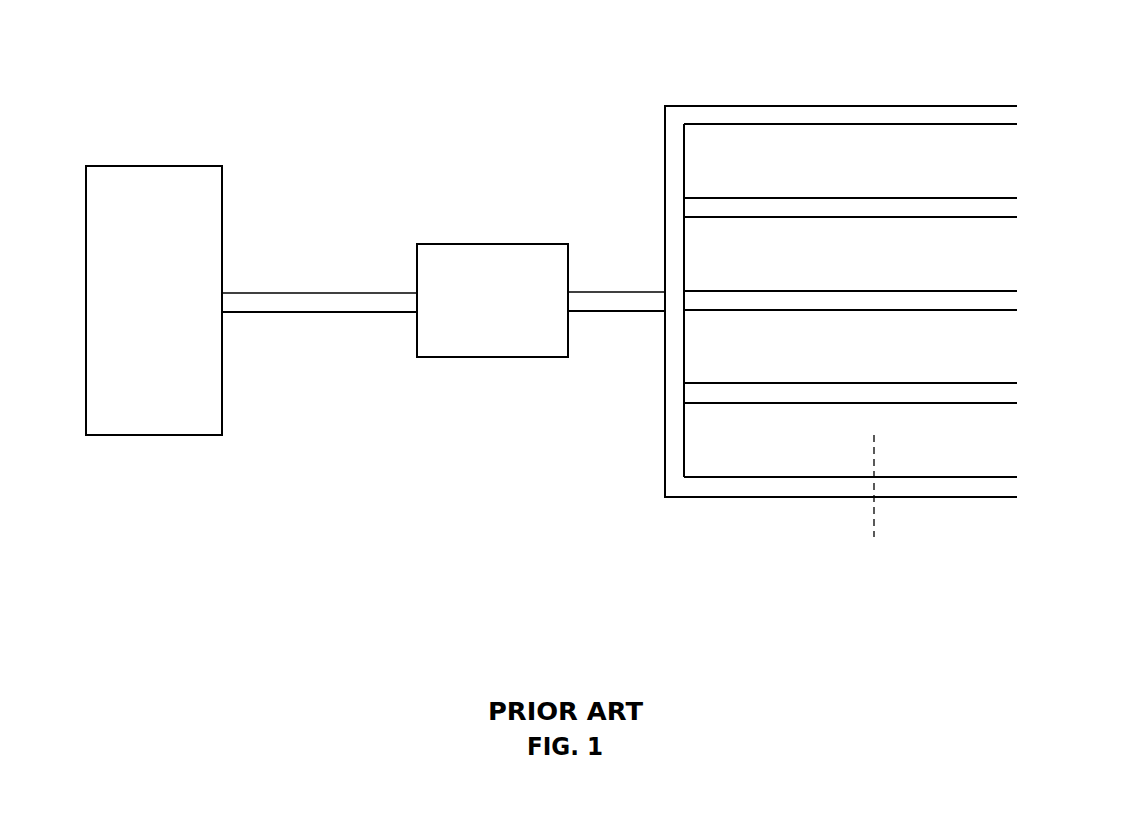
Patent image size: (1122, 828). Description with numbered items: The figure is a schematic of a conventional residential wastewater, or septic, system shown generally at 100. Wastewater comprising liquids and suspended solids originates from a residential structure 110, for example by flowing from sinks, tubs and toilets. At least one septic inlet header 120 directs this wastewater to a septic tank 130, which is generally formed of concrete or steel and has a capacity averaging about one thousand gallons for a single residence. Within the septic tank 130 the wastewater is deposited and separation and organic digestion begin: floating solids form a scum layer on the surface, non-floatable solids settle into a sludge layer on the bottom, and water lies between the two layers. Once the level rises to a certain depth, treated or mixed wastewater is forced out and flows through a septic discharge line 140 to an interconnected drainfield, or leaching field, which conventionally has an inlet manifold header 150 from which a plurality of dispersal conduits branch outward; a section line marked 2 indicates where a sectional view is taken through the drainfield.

The septic system 100 is at (400, 118).
The residential structure 110 is at (160, 403).
The septic inlet header 120 is at (346, 300).
The septic tank 130 is at (474, 342).
The septic discharge line 140 is at (615, 300).
The inlet manifold header 150 is at (673, 402).
The section line 2- 2 is at (874, 435).